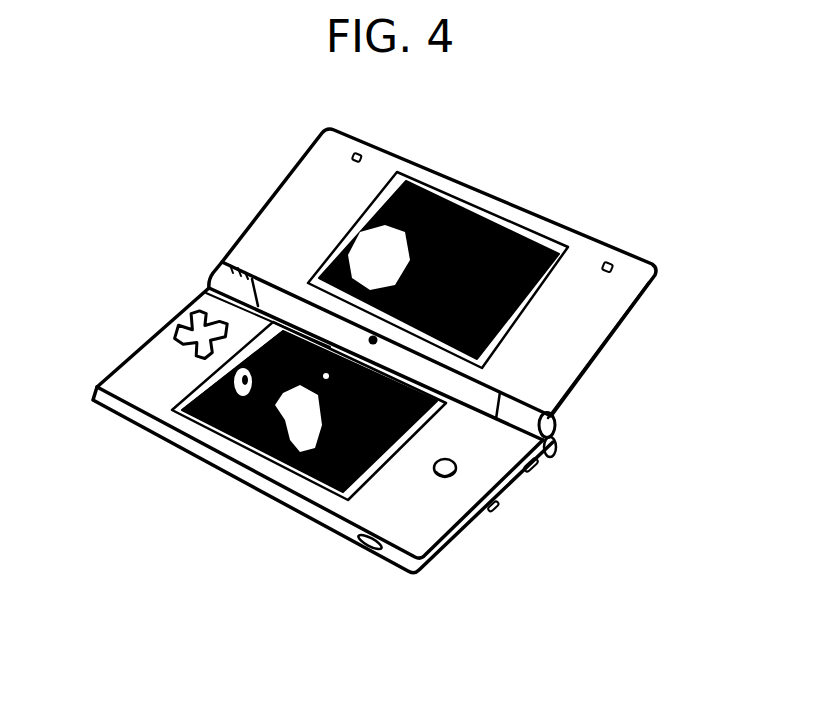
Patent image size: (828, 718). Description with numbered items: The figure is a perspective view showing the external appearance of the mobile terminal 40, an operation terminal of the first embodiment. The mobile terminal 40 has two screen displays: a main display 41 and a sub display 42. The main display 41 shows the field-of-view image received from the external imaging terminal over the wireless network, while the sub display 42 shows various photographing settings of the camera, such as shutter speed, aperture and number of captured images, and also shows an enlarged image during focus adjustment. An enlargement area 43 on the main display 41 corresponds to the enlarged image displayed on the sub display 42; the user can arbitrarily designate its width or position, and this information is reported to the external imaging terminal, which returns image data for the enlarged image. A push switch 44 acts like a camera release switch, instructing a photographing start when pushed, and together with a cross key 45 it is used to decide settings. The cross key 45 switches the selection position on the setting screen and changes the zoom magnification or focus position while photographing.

The mobile terminal 40 is at (615, 310).
The main display 41 is at (237, 413).
The sub display 42 is at (440, 223).
The enlargement area 43 is at (303, 377).
The push switch 44 is at (452, 465).
The cross key 45 is at (190, 325).